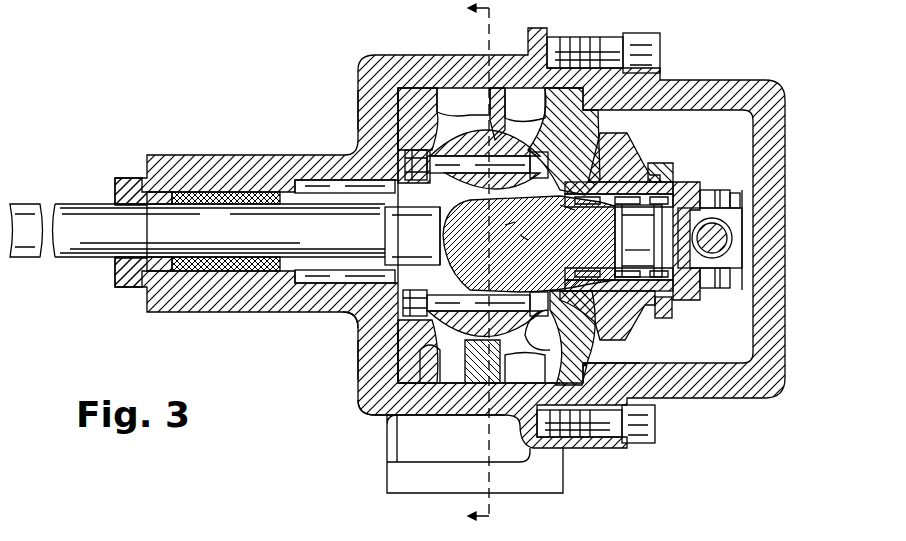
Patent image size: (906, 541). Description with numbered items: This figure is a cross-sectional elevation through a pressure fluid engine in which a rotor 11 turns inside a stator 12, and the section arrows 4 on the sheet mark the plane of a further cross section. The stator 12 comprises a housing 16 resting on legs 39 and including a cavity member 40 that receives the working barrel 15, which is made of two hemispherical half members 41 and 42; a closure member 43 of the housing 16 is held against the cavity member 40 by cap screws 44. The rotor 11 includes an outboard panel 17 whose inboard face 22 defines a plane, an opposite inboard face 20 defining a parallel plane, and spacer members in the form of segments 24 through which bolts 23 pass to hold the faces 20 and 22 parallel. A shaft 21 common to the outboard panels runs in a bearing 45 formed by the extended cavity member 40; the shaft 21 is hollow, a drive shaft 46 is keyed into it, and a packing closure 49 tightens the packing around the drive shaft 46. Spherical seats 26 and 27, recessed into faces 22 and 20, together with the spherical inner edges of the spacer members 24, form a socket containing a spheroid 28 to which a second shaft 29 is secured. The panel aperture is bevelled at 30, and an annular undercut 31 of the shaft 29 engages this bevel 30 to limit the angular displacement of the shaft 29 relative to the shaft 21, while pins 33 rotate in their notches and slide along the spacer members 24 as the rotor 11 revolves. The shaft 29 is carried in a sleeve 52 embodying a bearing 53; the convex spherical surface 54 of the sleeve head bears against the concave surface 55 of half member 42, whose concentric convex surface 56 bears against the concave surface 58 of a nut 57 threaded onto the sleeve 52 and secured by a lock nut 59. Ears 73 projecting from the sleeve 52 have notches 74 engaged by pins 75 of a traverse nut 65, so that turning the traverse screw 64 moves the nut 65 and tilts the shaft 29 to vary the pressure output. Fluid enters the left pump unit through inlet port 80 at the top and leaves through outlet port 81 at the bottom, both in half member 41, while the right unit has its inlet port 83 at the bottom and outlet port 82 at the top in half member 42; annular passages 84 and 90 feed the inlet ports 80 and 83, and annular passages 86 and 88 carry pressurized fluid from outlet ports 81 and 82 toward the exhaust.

The section line 4- 4 is at (460, 266).
The rotor 11 is at (355, 317).
The stator 12 is at (355, 103).
The working barrel 15 is at (395, 372).
The housing 16 is at (355, 352).
The outboard panel 17 is at (520, 165).
The inboard face 20 is at (505, 325).
The shaft 21 is at (345, 228).
The inboard face 22 is at (537, 330).
The bolts 23 is at (467, 165).
The spacer member 24 is at (475, 333).
The seat 26 is at (529, 244).
The spherical seat 27 is at (419, 236).
The spheroid 28 is at (412, 236).
The shaft 29 is at (637, 242).
The bevel 30 is at (515, 214).
The annular undercut 31 is at (570, 212).
The pin 33 is at (530, 234).
The legs 39 is at (548, 478).
The cavity member 40 is at (360, 410).
The half member 41 is at (405, 102).
The half member 42 is at (530, 106).
The closure member 43 is at (725, 92).
The cap screws 44 is at (665, 47).
The bearing 45 is at (320, 180).
The drive shaft 46 is at (120, 268).
The packing closure 49 is at (135, 182).
The sleeve 52 is at (648, 165).
The bearing 53 is at (638, 241).
The convexly spherical surface 54 is at (612, 145).
The concavely spherical surface 55 is at (619, 232).
The convexly spherical surface 56 is at (590, 355).
The nut 57 is at (672, 308).
The concavely spherical surface 58 is at (630, 332).
The lock nut 59 is at (684, 188).
The traverse screw 64 is at (725, 245).
The traverse nut 65 is at (742, 215).
The ears 73 is at (695, 200).
The notches 74 is at (746, 197).
The pins 75 is at (730, 195).
The inlet port 80 is at (418, 135).
The outlet port 81 is at (449, 351).
The outlet port 82 is at (485, 159).
The inlet port 83 is at (555, 368).
The annular passage 84 is at (466, 105).
The annular passage 86 is at (445, 385).
The annular passage 88 is at (564, 141).
The annular channel 90 is at (570, 372).